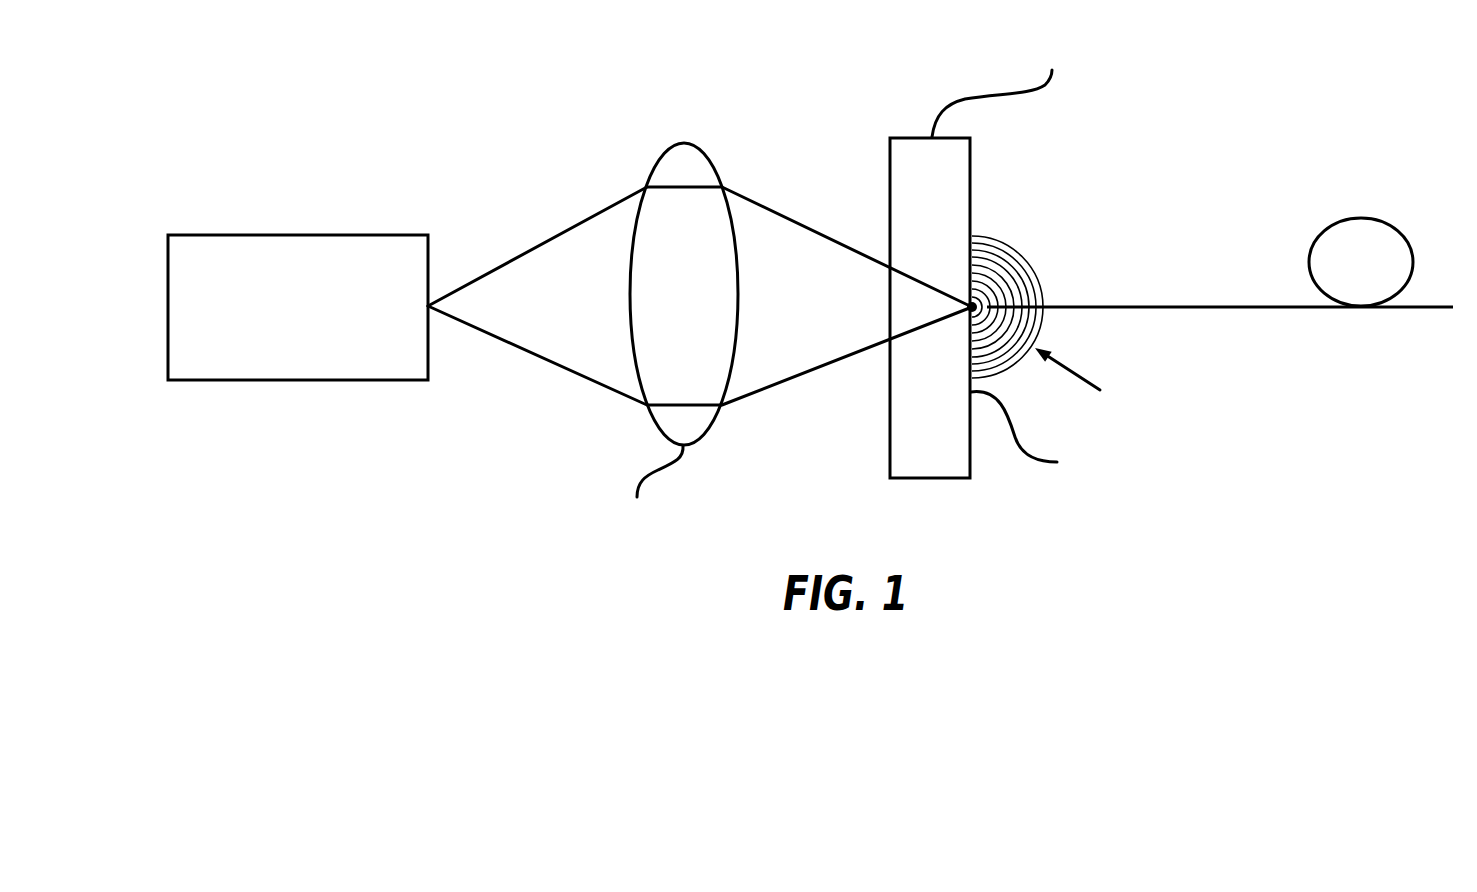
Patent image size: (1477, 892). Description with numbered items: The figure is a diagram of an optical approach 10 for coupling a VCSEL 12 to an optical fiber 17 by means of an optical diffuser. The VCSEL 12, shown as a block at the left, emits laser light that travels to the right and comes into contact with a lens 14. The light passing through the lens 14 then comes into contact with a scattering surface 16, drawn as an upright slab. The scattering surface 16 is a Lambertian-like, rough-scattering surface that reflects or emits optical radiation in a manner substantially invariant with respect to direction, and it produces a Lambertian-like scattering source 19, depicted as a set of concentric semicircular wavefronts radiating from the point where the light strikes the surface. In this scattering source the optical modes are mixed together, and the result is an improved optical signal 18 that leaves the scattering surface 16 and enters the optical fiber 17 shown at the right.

The optical approach 10 is at (322, 132).
The VCSEL 12 is at (212, 281).
The lens 14 is at (654, 168).
The scattering surface 16 is at (890, 178).
The optical fiber 17 is at (1322, 232).
The improved optical signal 18 is at (974, 302).
The Lambertian-like scattering source 19 is at (1046, 270).